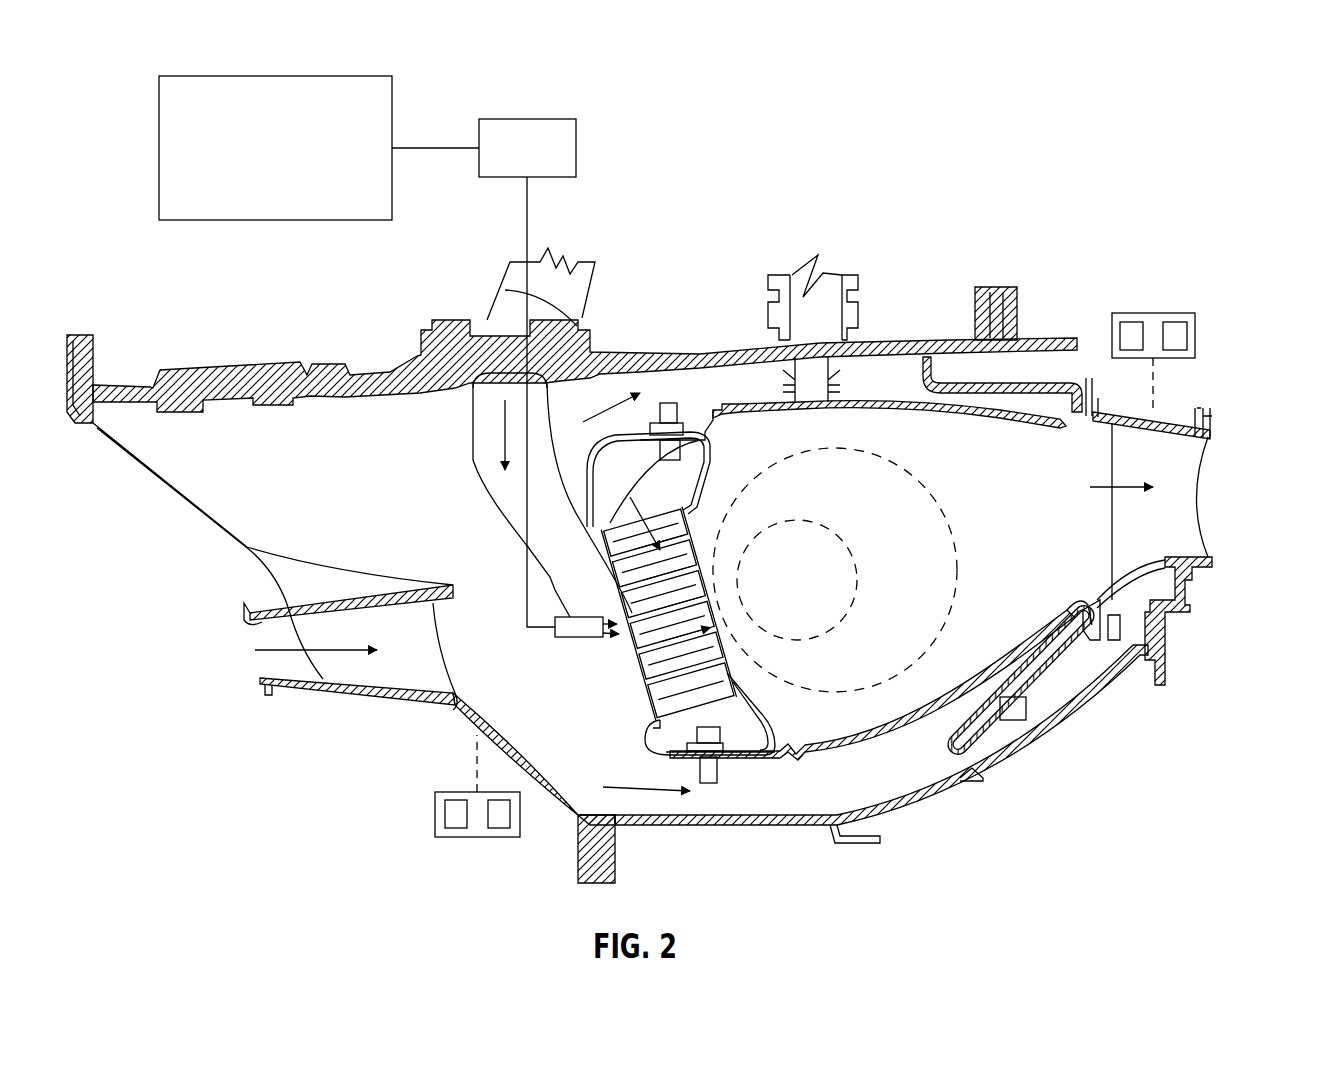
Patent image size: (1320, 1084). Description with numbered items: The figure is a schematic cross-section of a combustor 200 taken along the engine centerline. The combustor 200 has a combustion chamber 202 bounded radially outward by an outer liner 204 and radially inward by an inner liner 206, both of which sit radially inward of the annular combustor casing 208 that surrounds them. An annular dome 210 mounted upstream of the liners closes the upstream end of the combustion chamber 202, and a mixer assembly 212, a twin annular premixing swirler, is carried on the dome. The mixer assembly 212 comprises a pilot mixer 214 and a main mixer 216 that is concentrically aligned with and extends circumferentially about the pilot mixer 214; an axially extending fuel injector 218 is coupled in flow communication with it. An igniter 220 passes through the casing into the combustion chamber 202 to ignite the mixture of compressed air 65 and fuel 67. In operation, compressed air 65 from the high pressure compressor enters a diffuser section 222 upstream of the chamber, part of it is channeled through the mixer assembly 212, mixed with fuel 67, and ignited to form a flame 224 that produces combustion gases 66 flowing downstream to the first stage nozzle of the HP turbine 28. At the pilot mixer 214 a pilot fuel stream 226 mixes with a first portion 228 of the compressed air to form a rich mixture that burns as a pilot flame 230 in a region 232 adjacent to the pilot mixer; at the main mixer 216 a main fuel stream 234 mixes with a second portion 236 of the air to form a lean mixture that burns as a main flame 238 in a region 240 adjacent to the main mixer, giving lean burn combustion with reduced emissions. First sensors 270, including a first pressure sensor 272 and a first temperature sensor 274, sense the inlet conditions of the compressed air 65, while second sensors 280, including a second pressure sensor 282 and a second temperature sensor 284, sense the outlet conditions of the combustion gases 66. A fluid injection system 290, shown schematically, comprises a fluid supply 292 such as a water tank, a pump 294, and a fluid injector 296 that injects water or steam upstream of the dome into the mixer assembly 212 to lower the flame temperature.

The combustor 200 is at (1142, 124).
The combustion chamber 202 is at (1034, 562).
The outer liner 204 is at (1020, 400).
The inner liner 206 is at (838, 742).
The annular combustor casing 208 is at (652, 355).
The annular dome 210 is at (700, 762).
The mixer assembly 212 is at (620, 667).
The pilot mixer 214 is at (619, 637).
The main mixer 216 is at (643, 690).
The fuel injector 218 is at (474, 447).
The igniter 220 is at (786, 272).
The diffuser section 222 is at (338, 507).
The flame 224 is at (962, 580).
The pilot fuel stream 226 is at (718, 592).
The first portion of the compressed air 228 is at (612, 605).
The pilot flame 230 is at (833, 536).
The region 232 is at (860, 600).
The main fuel stream 234 is at (735, 620).
The second portion of the compressed air 236 is at (700, 455).
The main flame 238 is at (893, 462).
The region 240 is at (940, 488).
The first sensors 270 is at (458, 838).
The first pressure sensor 272 is at (445, 815).
The first temperature sensor 274 is at (502, 829).
The second sensors 280 is at (1170, 322).
The second pressure sensor 282 is at (1128, 322).
The second temperature sensor 284 is at (1187, 338).
The fluid injection system 290 is at (572, 94).
The fluid supply 292 is at (206, 76).
The pump 294 is at (526, 119).
The fluid injector 296 is at (553, 624).
The compressed air 65 is at (340, 652).
The combustion gases 66 is at (1122, 487).
The fuel 67 is at (503, 438).
The HP turbine 28 is at (1210, 578).